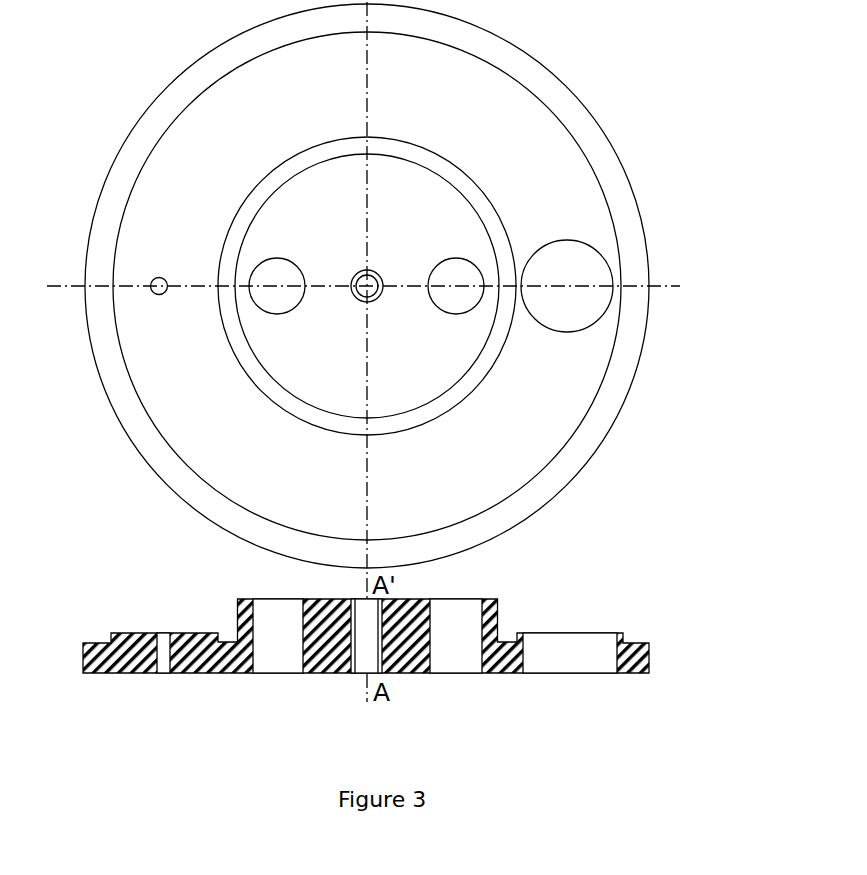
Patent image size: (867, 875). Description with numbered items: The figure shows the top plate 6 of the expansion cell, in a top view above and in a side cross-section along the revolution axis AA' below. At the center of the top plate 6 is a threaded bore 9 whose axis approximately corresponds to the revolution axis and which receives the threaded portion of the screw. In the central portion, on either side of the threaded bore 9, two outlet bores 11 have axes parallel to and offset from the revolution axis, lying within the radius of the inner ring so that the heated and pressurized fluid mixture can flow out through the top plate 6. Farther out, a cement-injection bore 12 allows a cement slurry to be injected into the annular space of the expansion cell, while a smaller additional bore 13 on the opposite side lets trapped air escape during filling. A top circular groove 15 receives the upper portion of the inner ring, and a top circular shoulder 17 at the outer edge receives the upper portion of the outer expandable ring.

The top plate 6 is at (682, 308).
The threaded bore 9 is at (370, 275).
The outlet bores 11 is at (273, 305).
The cement-injection bore 12 is at (560, 318).
The additional bore 13 is at (159, 295).
The top circular groove 15 is at (237, 233).
The top circular shoulder 17 is at (120, 166).